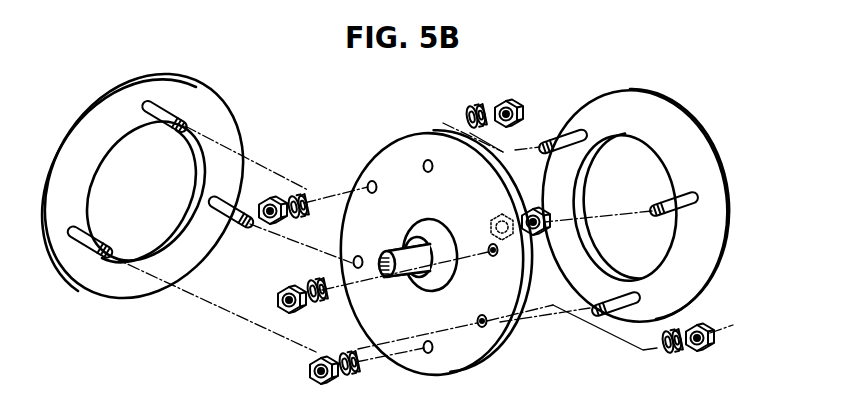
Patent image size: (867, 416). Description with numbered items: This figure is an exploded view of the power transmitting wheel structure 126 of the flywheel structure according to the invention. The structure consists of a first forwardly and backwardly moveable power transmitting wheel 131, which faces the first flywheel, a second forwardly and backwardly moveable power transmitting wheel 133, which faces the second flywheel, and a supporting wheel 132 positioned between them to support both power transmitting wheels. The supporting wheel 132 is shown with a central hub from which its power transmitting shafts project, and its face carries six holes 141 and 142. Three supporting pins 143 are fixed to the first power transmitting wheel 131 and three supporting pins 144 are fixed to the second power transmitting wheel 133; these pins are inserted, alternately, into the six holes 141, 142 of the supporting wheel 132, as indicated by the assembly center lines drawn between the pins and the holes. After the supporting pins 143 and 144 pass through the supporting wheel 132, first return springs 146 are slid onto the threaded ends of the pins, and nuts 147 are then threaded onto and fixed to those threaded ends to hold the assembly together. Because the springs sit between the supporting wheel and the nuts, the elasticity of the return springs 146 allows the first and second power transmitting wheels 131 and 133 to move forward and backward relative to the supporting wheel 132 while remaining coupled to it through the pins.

The power transmitting wheel structure 126 is at (178, 350).
The first power transmitting wheel 131 is at (228, 128).
The supporting wheel 132 is at (392, 158).
The second power transmitting wheel 133 is at (628, 110).
The holes 141 is at (372, 182).
The holes 142 is at (360, 257).
The supporting pins 143 is at (108, 250).
The supporting pins 144 is at (624, 294).
The first return springs 146 is at (476, 106).
The nuts 147 is at (512, 102).